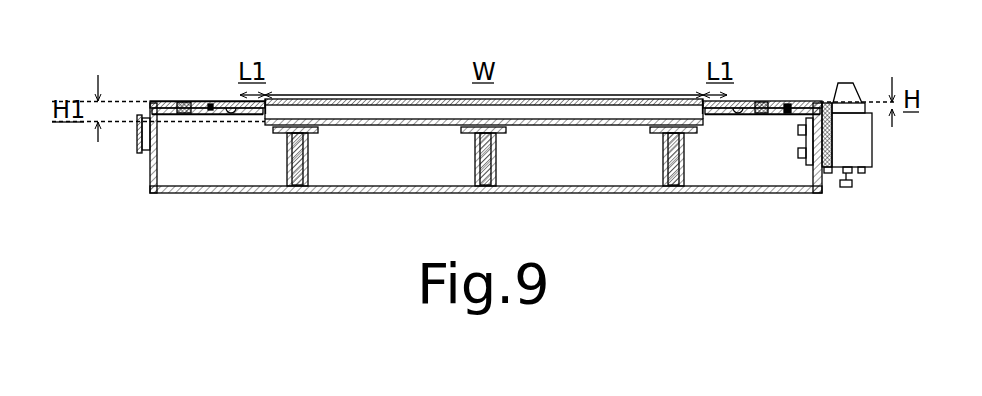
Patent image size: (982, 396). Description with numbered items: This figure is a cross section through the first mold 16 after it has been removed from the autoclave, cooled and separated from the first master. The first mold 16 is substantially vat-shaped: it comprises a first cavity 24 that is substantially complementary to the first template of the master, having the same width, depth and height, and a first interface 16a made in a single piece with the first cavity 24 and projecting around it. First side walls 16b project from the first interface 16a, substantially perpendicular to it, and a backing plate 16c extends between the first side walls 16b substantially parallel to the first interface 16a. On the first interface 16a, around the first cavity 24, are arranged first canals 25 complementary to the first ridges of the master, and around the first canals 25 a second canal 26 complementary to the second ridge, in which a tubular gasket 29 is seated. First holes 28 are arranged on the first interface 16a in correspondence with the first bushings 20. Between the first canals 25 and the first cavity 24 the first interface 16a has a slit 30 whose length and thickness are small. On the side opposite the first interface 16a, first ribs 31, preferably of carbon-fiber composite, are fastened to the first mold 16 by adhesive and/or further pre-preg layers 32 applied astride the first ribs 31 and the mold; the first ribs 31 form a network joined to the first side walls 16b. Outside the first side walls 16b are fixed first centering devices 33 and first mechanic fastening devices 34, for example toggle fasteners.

The first mold 16 is at (491, 157).
The first interface 16a is at (168, 102).
The first side walls 16b is at (152, 176).
The backing plate 16c is at (740, 192).
The first bushings 20 is at (186, 114).
The first cavity 24 is at (587, 118).
The first canals 25 is at (232, 105).
The second canal 26 is at (186, 103).
The first holes 28 is at (788, 110).
The tubular gasket 29 is at (223, 113).
The slit 30 is at (268, 97).
The first ribs 31 is at (303, 186).
The further pre-preg layers 32 is at (292, 186).
The first centering devices 33 is at (863, 150).
The first mechanic fastening devices 34 is at (832, 150).